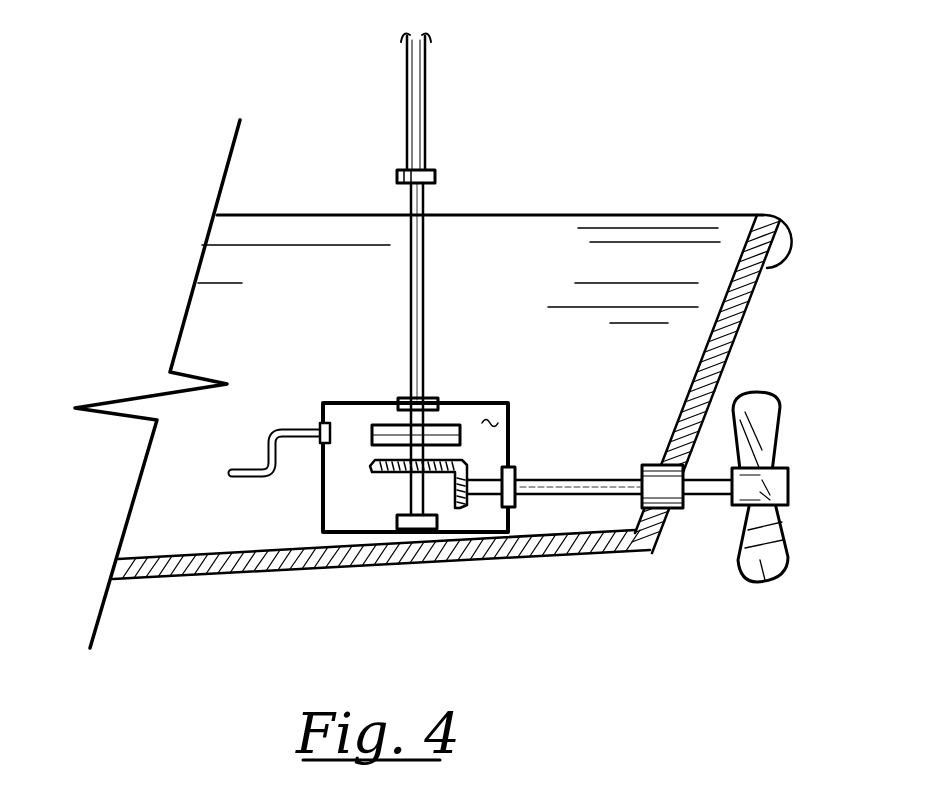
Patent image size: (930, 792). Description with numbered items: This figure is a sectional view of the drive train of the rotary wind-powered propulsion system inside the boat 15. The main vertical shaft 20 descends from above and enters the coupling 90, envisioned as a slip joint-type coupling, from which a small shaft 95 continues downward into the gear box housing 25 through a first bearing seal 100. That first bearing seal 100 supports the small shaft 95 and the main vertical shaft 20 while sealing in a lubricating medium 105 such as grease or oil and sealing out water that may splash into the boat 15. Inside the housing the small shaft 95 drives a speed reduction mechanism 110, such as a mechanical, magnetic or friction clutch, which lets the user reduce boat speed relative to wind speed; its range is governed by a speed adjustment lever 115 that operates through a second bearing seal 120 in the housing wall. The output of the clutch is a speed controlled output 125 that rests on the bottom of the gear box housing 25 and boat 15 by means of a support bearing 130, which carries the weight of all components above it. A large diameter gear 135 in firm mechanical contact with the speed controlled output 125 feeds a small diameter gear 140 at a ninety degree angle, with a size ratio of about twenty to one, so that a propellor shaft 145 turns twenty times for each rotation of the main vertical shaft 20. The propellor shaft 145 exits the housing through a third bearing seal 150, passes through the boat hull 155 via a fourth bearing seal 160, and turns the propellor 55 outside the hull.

The boat 15 is at (312, 213).
The main vertical shaft 20 is at (422, 117).
The gear box housing 25 is at (357, 402).
The propellor 55 is at (773, 578).
The coupling 90 is at (400, 170).
The small shaft 95 is at (425, 200).
The first bearing seal 100 is at (403, 397).
The lubricating medium 105 is at (490, 410).
The speed reduction mechanism 110 is at (445, 425).
The speed adjustment lever 115 is at (274, 436).
The second bearing seal 120 is at (322, 448).
The speed controlled output 125 is at (397, 453).
The support bearing 130 is at (418, 522).
The large diameter gear 135 is at (373, 467).
The small diameter gear 140 is at (457, 515).
The propellor shaft 145 is at (575, 480).
The third bearing seal 150 is at (518, 507).
The boat hull 155 is at (725, 365).
The fourth bearing seal 160 is at (668, 510).